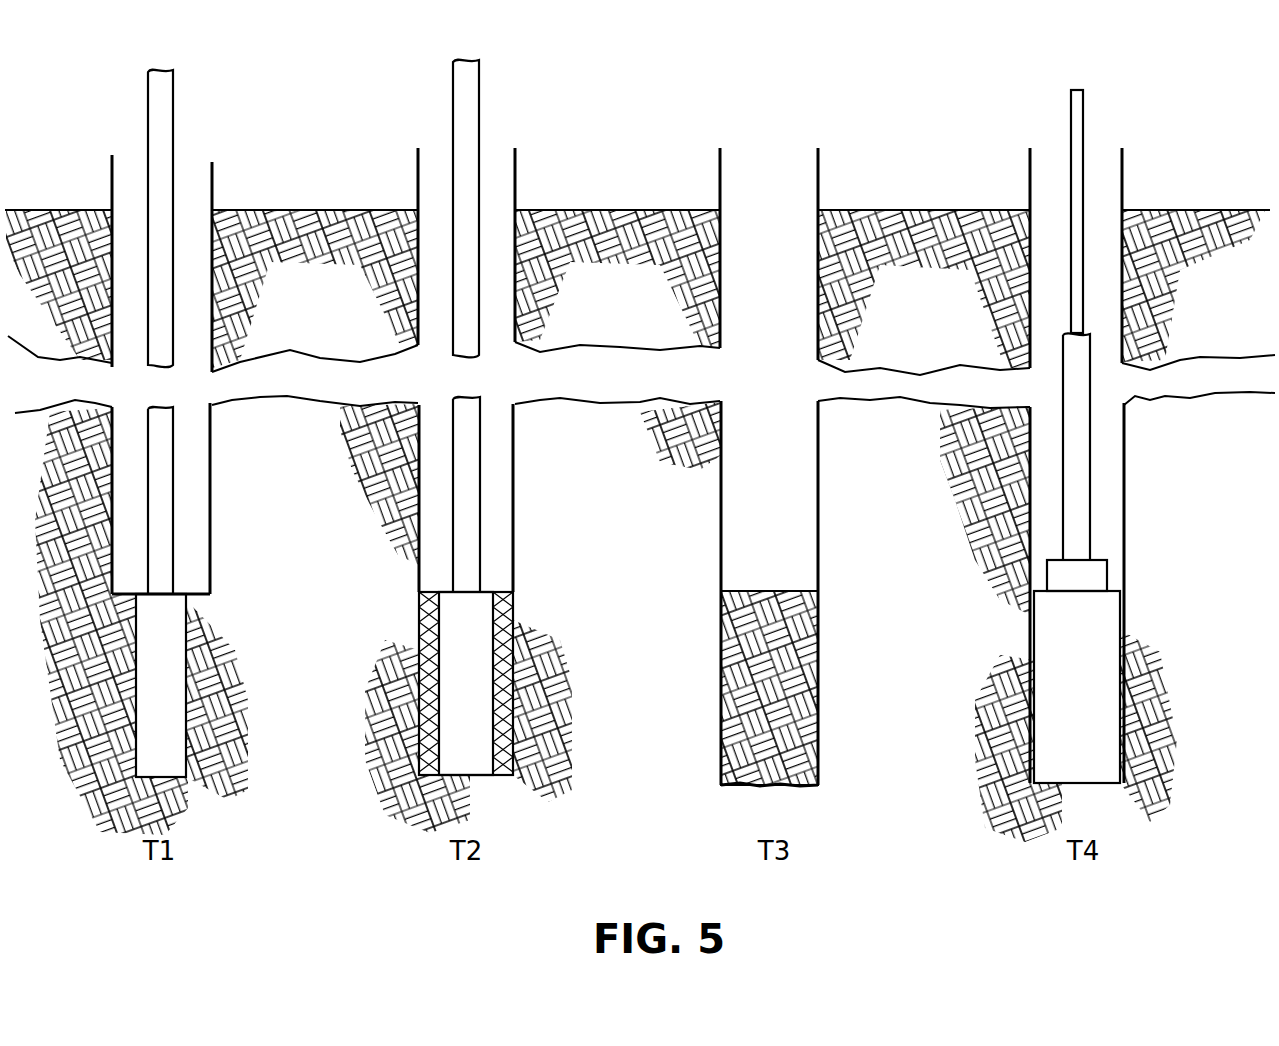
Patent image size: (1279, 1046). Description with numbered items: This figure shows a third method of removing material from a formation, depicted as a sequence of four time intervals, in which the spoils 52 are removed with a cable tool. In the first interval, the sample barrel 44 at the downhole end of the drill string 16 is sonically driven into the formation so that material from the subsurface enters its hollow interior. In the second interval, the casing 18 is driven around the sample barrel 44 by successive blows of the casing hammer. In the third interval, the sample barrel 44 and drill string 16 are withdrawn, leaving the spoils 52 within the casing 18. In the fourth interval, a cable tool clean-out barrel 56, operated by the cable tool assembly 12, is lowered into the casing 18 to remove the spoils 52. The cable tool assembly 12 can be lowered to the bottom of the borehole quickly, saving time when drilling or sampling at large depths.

The cable tool assembly 12 is at (1076, 475).
The drill string 16 is at (160, 118).
The casing 18 is at (214, 178).
The sample barrel 44 is at (174, 699).
The spoils 52 is at (819, 715).
The cable tool clean-out barrel 56 is at (1103, 693).